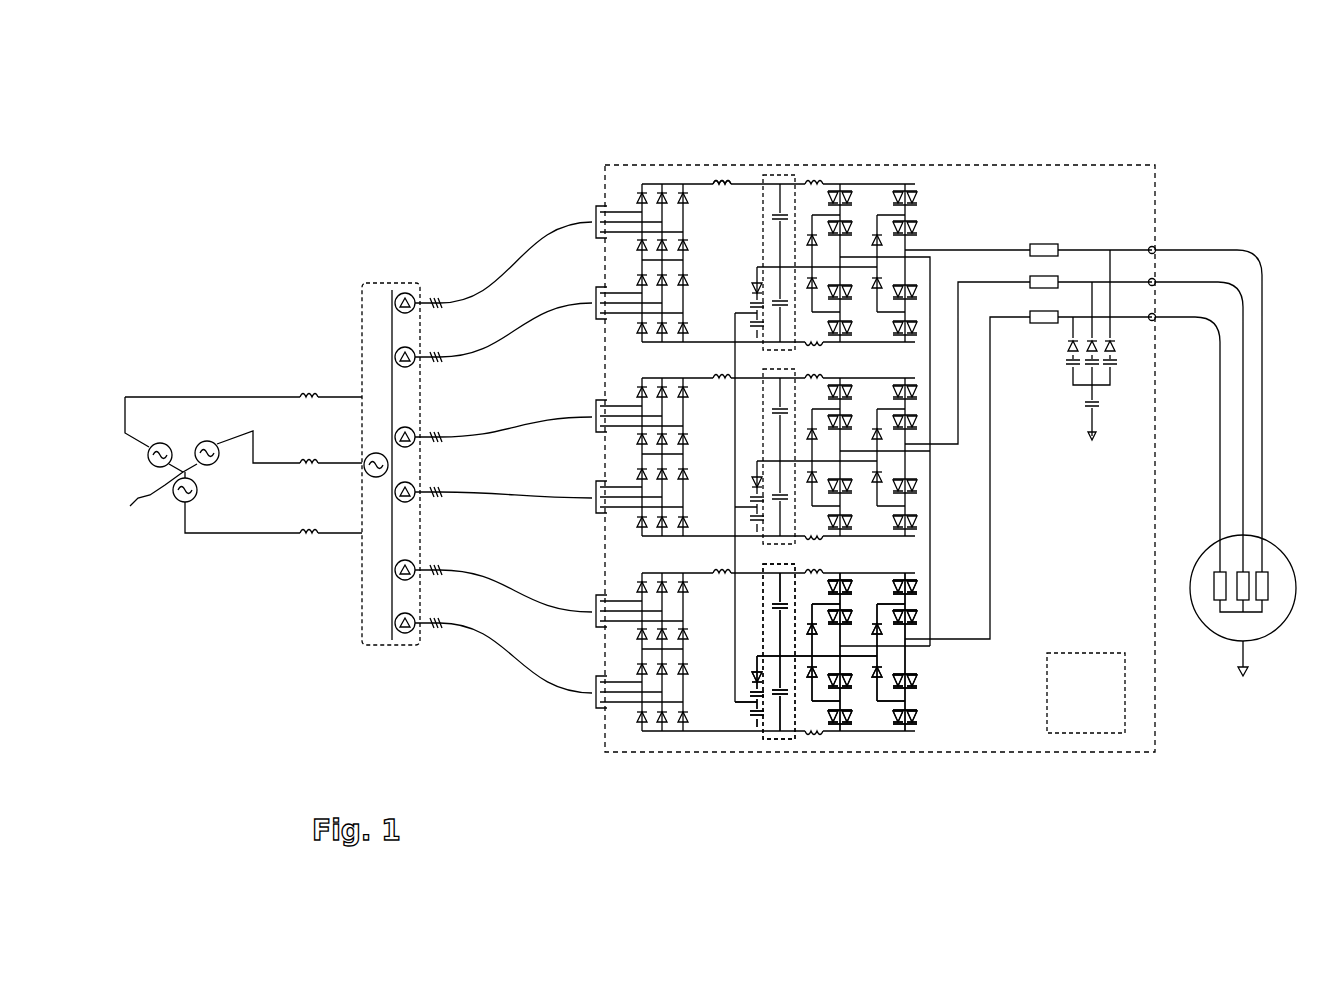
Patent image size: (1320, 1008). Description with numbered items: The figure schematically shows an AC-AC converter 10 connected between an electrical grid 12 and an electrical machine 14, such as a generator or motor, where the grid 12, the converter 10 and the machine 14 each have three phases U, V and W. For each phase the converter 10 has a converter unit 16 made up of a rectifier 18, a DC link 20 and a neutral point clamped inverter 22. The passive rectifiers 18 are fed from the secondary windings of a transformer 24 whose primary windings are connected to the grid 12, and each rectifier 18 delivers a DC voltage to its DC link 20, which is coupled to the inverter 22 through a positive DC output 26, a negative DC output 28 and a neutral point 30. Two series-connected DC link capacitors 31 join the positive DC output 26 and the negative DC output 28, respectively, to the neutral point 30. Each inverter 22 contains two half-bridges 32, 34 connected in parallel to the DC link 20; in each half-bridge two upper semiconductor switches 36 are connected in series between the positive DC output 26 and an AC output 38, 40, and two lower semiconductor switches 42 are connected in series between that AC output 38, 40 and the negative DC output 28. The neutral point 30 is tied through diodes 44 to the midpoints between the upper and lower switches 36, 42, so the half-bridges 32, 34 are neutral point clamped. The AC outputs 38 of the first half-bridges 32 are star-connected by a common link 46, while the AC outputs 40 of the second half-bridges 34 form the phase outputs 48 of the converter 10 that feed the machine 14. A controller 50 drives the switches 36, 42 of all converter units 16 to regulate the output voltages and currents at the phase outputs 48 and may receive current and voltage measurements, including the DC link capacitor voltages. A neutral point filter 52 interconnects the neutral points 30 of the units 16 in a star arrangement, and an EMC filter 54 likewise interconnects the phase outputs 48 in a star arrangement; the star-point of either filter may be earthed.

The AC-AC converter 10 is at (1163, 144).
The electrical grid 12 is at (222, 336).
The electrical machine 14 is at (1213, 548).
The converter unit 16 is at (554, 267).
The rectifier 18 is at (621, 777).
The DC link 20 is at (785, 752).
The neutral point clamped inverter 22 is at (900, 778).
The transformer 24 is at (390, 268).
The positive DC output 26 is at (893, 551).
The negative DC output 28 is at (878, 735).
The neutral point 30 is at (800, 662).
The DC link capacitor 31 is at (767, 630).
The first half-bridge 32 is at (847, 750).
The second half-bridge 34 is at (910, 748).
The upper semiconductor switch 36 is at (951, 600).
The AC output 38 is at (945, 583).
The AC output 40 is at (990, 612).
The lower semiconductor switch 42 is at (928, 701).
The diode 44 is at (892, 660).
The common link 46 is at (950, 478).
The phase output 48 is at (1182, 222).
The controller 50 is at (1090, 738).
The neutral point filter 52 is at (737, 215).
The EMC filter 54 is at (1023, 349).